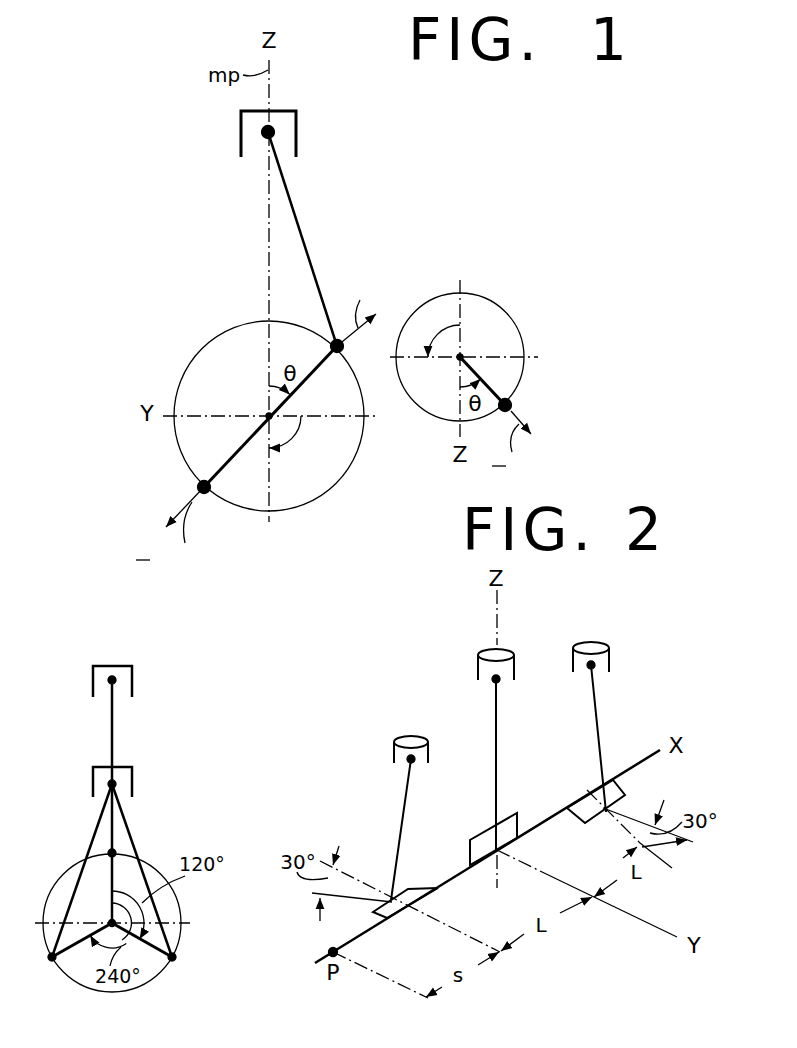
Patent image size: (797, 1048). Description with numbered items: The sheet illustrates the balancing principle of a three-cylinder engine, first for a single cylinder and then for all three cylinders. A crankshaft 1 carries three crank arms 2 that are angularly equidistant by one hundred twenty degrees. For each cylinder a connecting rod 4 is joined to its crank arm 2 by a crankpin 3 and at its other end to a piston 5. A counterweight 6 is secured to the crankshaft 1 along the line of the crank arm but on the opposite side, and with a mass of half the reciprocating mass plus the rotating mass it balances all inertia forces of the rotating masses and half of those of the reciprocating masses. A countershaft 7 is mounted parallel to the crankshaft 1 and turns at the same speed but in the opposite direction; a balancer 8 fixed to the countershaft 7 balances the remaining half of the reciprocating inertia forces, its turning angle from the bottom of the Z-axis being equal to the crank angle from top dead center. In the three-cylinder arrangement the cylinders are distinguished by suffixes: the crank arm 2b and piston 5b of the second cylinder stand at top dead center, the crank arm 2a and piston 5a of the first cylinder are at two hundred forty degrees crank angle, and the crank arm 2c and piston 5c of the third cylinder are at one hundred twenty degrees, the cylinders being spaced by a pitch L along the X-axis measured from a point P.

In FIG. 1, the crankshaft 1 is at (267, 414).
In FIG. 2, the crankshaft 1 is at (110, 921).
In FIG. 1, the crank arm 2 is at (313, 373).
In FIG. 1, the crankpin 3 is at (342, 352).
In FIG. 1, the connecting rod 4 is at (308, 250).
In FIG. 1, the piston 5 is at (298, 142).
In FIG. 1, the counterweight 6 is at (198, 487).
In FIG. 1, the countershaft 7 is at (460, 357).
In FIG. 1, the balancer 8 is at (510, 404).
In FIG. 2, the crank arm of the first cylinder 2a is at (73, 946).
In FIG. 2, the crank arm of the second cylinder 2b is at (113, 872).
In FIG. 2, the crank arm of the third cylinder 2c is at (158, 951).
In FIG. 2, the piston of the first cylinder 5a is at (135, 787).
In FIG. 2, the piston of the second cylinder 5b is at (132, 692).
In FIG. 2, the piston of the third cylinder 5c is at (611, 670).